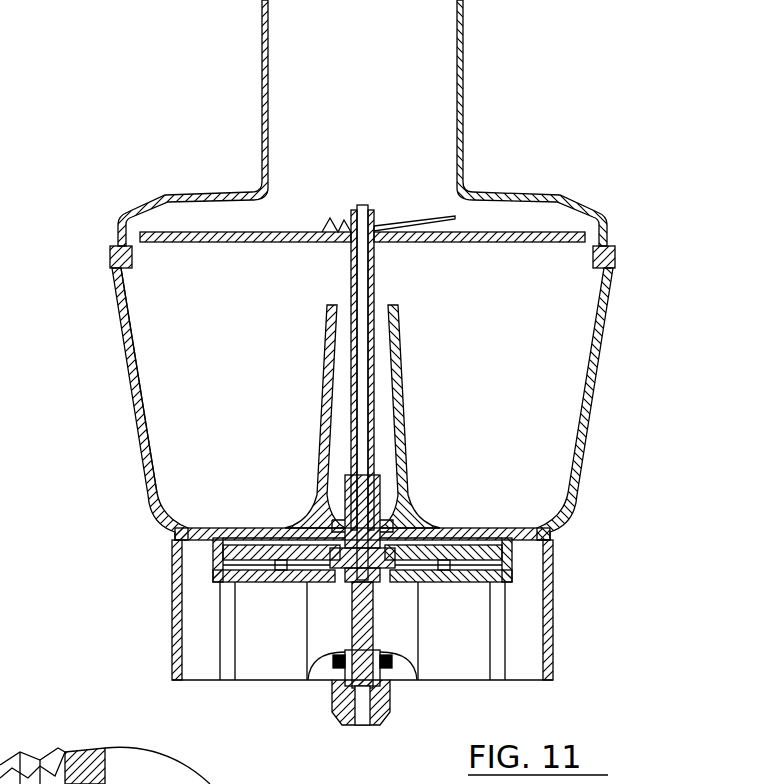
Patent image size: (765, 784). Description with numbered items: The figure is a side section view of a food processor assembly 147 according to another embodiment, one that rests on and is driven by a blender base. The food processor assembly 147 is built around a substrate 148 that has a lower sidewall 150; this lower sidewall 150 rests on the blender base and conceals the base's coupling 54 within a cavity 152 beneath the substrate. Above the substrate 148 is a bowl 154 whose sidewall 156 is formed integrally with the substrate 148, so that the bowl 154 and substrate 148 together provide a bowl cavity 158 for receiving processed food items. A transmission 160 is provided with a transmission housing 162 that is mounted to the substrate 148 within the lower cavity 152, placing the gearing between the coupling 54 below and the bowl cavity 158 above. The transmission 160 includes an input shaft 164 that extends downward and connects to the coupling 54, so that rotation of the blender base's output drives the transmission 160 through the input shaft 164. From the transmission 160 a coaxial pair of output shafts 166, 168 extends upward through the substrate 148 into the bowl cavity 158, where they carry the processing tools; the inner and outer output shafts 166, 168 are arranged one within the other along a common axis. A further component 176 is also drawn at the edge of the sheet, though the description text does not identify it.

The food processor assembly 147 is at (97, 48).
The bowl 154 is at (113, 298).
The sidewall 156 is at (113, 322).
The bowl cavity 158 is at (575, 304).
The substrate 148 is at (172, 528).
The output shaft 168 is at (372, 358).
The output shaft 166 is at (372, 460).
The transmission housing 162 is at (215, 550).
The transmission 160 is at (210, 563).
The lower sidewall 150 is at (172, 632).
The cavity 152 is at (518, 665).
The input shaft 164 is at (372, 630).
The coupling 54 is at (332, 700).
The gear 176 is at (170, 783).